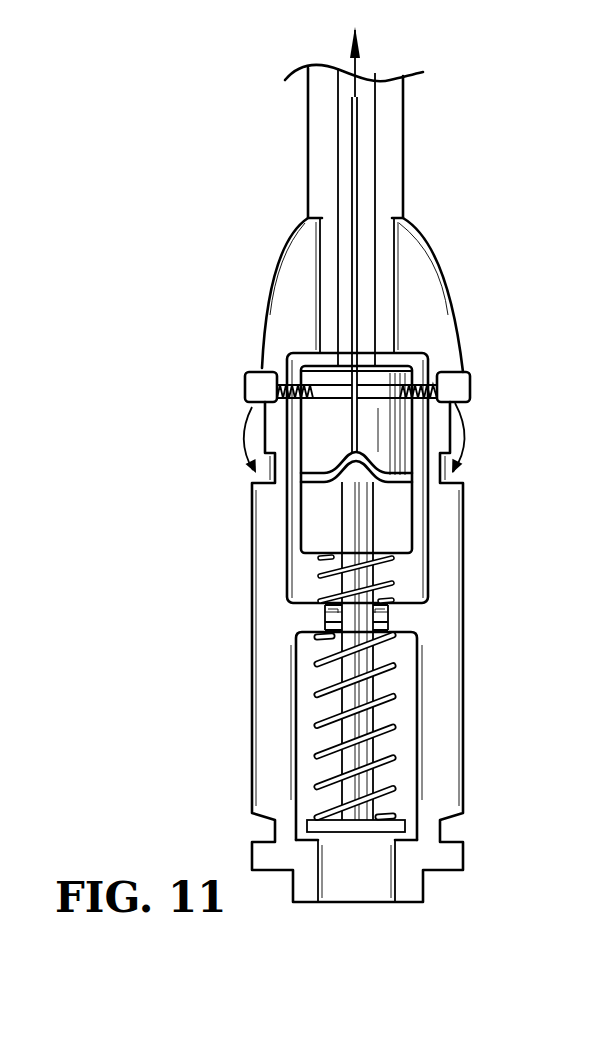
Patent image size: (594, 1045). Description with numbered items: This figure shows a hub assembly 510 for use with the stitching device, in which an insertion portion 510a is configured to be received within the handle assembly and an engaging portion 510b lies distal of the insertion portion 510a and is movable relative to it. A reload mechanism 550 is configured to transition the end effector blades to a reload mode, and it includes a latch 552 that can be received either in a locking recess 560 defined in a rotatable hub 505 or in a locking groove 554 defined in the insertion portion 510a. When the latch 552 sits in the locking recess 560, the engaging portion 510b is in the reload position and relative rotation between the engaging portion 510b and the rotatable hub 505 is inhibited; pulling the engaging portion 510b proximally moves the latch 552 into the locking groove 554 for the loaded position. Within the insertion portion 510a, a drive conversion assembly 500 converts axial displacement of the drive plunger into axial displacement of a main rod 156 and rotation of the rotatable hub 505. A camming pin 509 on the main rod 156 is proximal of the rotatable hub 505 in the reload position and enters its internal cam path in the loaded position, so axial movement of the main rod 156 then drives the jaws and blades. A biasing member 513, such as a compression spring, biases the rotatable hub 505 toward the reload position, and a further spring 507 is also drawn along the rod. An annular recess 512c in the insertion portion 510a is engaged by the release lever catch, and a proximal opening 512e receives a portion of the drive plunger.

The locking recess 560 is at (387, 380).
The engaging portion 510b is at (260, 363).
The insertion portion 510a is at (262, 589).
The rotatable hub 505 is at (318, 428).
The reload mechanism 550 is at (470, 366).
The latch 552 is at (458, 388).
The locking groove 554 is at (450, 472).
The drive conversion assembly 500 is at (447, 513).
The hub assembly 510 is at (297, 502).
The upper spring 507 is at (407, 554).
The biasing member 513 is at (410, 565).
The camming pin 509 is at (333, 608).
The main rod 156 is at (367, 722).
The annular recess 512c is at (457, 832).
The proximal opening 512e is at (352, 893).